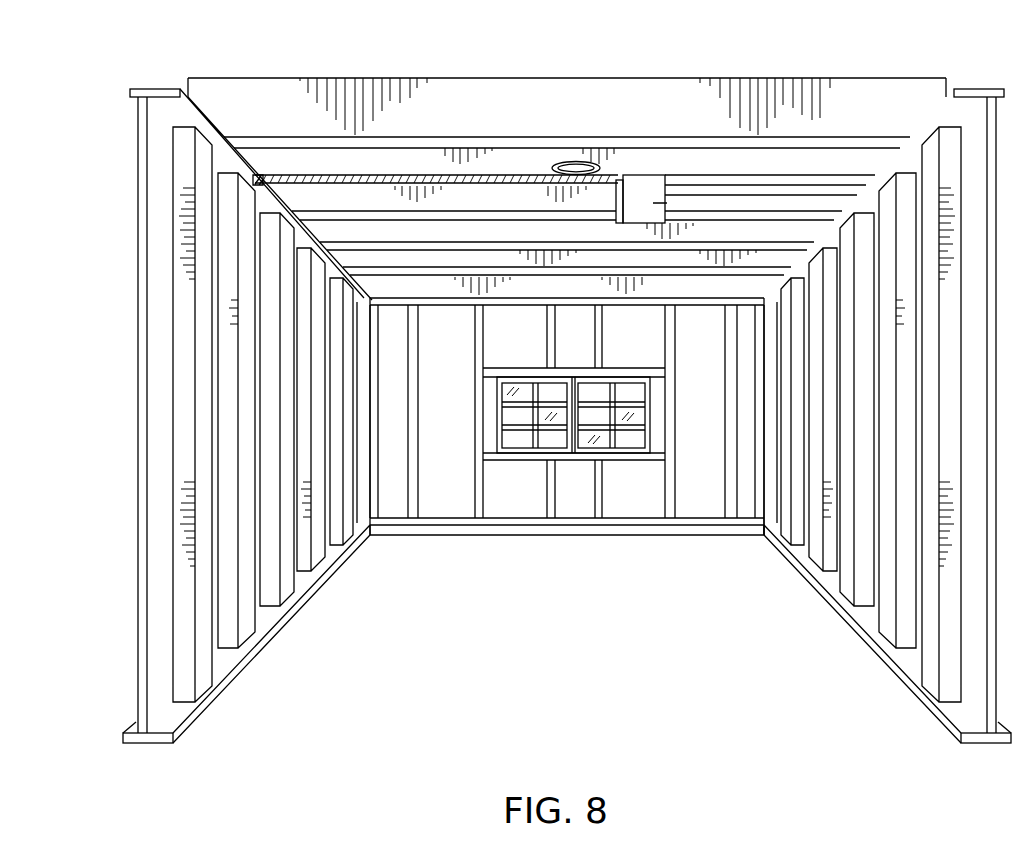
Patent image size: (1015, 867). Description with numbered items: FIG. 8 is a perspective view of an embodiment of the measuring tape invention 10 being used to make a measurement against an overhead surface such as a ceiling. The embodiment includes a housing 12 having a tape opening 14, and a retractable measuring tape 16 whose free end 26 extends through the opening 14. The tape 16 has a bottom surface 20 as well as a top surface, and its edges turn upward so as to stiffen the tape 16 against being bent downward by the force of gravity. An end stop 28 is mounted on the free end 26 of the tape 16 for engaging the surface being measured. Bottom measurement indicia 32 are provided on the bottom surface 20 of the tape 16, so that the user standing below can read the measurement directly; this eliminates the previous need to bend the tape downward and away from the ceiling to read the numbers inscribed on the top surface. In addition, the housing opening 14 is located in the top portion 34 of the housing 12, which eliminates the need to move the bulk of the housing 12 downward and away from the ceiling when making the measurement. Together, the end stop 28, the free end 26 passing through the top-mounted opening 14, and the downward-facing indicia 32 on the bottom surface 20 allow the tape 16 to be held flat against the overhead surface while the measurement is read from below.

The automatic garage door opener system 10 is at (527, 164).
The housing 12 is at (660, 203).
The tape opening 14 is at (620, 176).
The retractable measuring tape 16 is at (450, 174).
The bottom surface 20 is at (525, 184).
The free end 26 is at (262, 176).
The end stop 28 is at (250, 172).
The bottom measurement indicia 32 is at (402, 186).
The top portion 34 is at (622, 178).